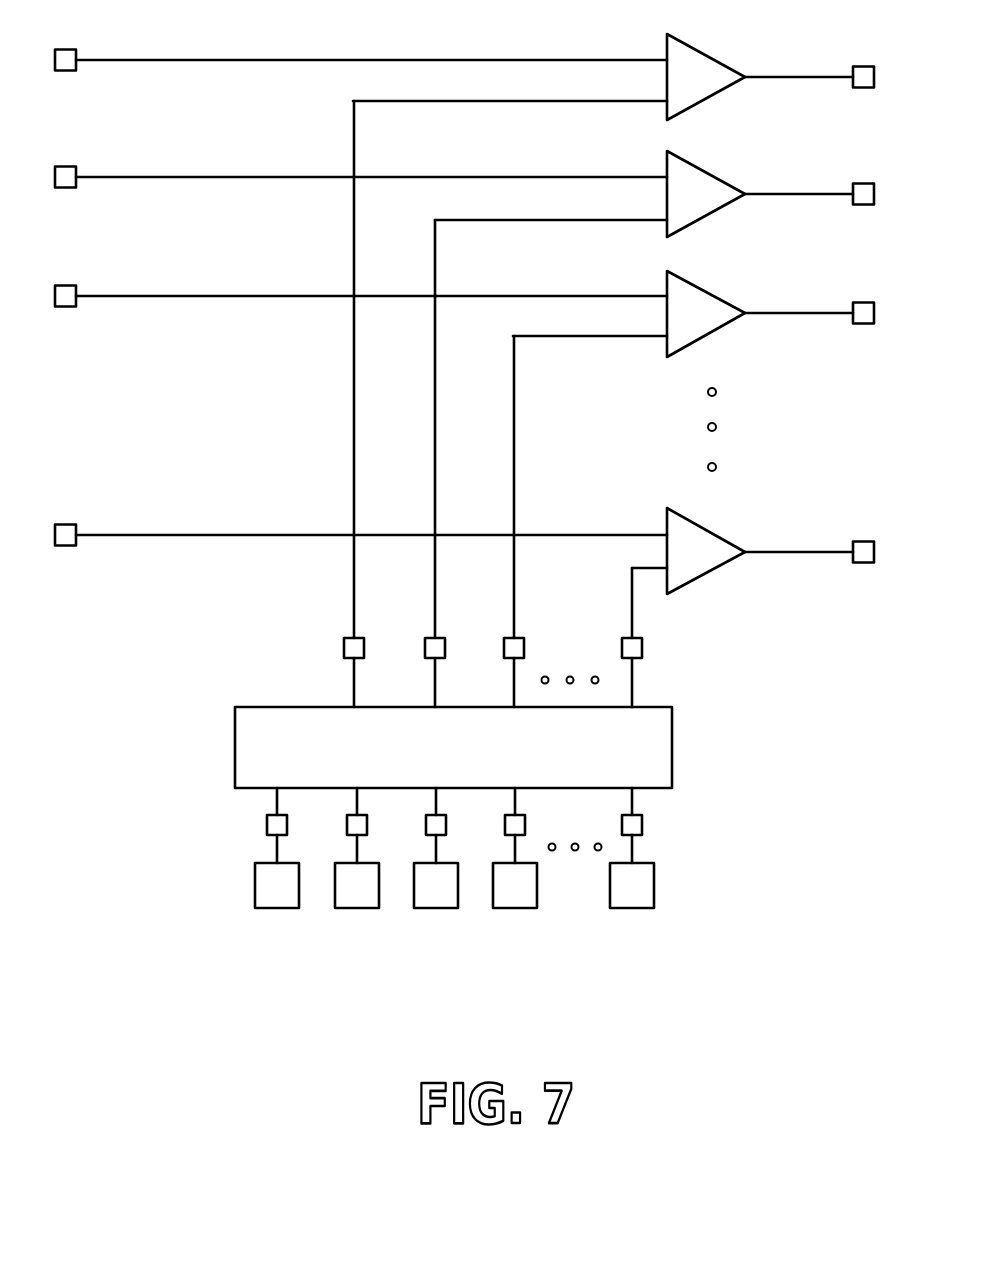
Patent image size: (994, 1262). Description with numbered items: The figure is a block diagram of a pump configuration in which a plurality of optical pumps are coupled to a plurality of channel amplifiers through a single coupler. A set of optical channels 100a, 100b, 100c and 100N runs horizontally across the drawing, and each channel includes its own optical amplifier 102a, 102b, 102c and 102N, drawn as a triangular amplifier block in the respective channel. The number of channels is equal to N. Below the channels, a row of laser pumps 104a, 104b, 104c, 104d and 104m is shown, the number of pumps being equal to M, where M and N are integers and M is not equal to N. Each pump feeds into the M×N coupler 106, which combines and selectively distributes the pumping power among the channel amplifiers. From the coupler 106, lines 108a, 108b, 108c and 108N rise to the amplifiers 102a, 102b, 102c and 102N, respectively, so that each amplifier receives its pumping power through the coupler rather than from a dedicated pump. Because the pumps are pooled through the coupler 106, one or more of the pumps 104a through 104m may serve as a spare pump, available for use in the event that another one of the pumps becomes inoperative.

The channel 100a is at (107, 60).
The channel 100b is at (107, 177).
The channel 100c is at (107, 296).
The channel 100N is at (107, 535).
The optical amplifier 102a is at (705, 47).
The optical amplifier 102b is at (708, 170).
The optical amplifier 102c is at (708, 290).
The optical amplifier 102N is at (712, 527).
The laser pump 104a is at (277, 908).
The laser pump 104b is at (357, 908).
The laser pump 104c is at (436, 908).
The laser pump 104d is at (515, 908).
The laser pump 104m is at (632, 908).
The M×N coupler 106 is at (672, 752).
The line 108a is at (354, 674).
The line 108b is at (435, 684).
The line 108c is at (515, 672).
The line 108N is at (632, 688).